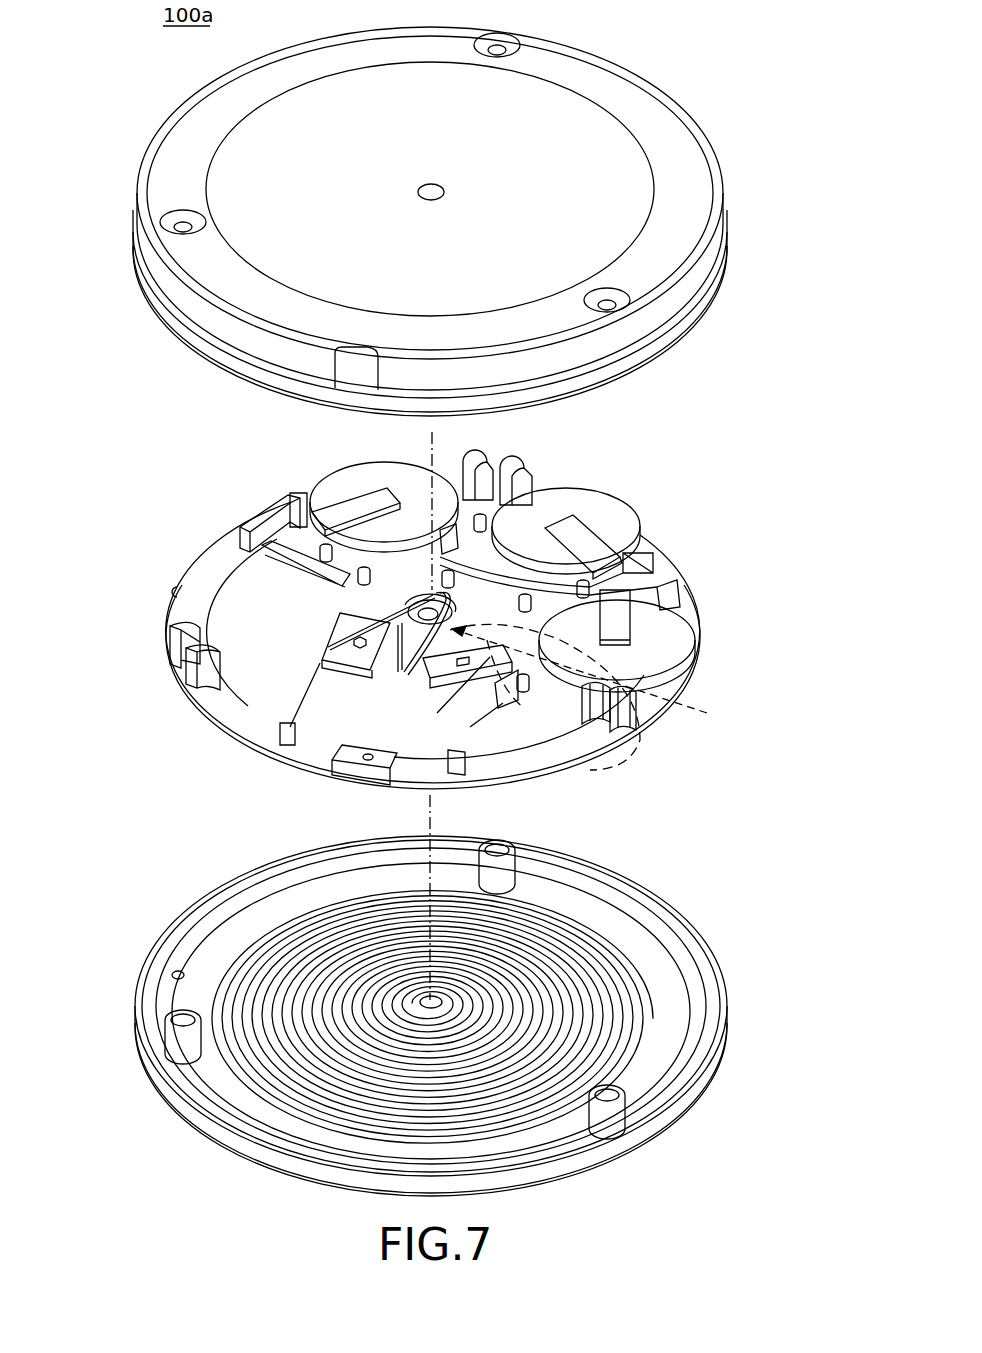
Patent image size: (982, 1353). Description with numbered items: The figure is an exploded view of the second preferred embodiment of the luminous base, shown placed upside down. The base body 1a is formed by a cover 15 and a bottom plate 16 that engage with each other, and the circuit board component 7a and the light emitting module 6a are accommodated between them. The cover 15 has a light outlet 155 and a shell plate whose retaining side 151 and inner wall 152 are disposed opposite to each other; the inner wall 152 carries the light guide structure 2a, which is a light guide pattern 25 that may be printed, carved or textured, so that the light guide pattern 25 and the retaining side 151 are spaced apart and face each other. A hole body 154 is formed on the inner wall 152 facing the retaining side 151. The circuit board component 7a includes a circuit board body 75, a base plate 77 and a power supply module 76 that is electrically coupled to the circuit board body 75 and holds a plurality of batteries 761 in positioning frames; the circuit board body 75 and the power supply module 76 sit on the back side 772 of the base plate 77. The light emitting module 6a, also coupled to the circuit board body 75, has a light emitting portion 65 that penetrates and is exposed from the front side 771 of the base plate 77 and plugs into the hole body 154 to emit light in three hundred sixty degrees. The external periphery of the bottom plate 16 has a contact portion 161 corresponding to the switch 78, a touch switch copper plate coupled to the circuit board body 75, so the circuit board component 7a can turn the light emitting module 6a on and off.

The bottom plate 16 is at (443, 232).
The contact portion 161 is at (360, 366).
The circuit board component 7a is at (448, 622).
The base plate 77 is at (683, 690).
The front side 771 is at (227, 738).
The back side 772 is at (213, 568).
The power supply module 76 is at (621, 503).
The batteries 761 is at (593, 500).
The circuit board body 75 is at (445, 640).
The switch 78 is at (353, 768).
The light emitting portion 65 is at (575, 767).
The light emitting module 6a is at (593, 678).
The base body 1a is at (451, 1007).
The cover 15 is at (667, 1122).
The retaining side 151 is at (265, 1167).
The inner wall 152 is at (550, 884).
The hole body 154 is at (428, 997).
The light outlet 155 is at (260, 930).
The light guide pattern 25 is at (593, 947).
The light guide structure 2a is at (653, 851).